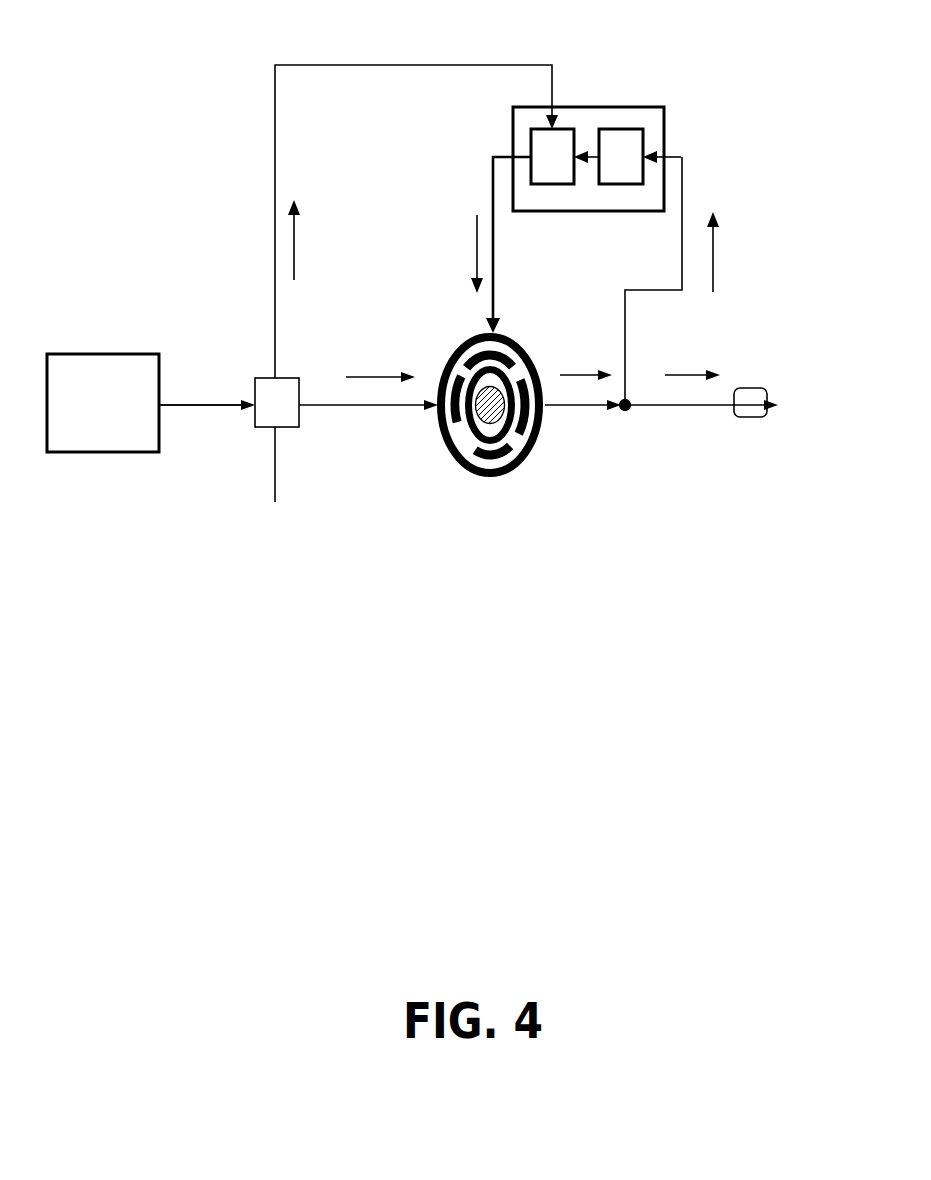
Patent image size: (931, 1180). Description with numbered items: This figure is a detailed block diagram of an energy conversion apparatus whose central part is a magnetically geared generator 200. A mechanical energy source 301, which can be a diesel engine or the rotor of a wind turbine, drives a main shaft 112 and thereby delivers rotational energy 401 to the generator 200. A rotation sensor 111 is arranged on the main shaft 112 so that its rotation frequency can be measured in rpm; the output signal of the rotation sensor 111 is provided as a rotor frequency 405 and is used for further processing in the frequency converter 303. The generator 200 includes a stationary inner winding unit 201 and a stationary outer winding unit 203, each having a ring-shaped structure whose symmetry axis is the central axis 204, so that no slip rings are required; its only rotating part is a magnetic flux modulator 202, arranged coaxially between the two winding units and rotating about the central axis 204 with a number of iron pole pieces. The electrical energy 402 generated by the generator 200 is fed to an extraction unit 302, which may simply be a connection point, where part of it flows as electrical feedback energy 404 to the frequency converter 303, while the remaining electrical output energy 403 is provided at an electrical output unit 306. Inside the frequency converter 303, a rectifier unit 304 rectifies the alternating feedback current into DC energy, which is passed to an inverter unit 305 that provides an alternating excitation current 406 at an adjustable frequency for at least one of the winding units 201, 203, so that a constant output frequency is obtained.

The mechanical energy source 301 is at (103, 354).
The main shaft 112 is at (207, 425).
The rotation sensor 111 is at (279, 460).
The rotor frequency 405 is at (297, 238).
The alternating excitation current 406 is at (475, 253).
The flow arrow 401 is at (377, 373).
The electrical energy 402 is at (576, 372).
The electrical output energy 403 is at (690, 372).
The electrical feedback energy 404 is at (714, 248).
The frequency converter 303 is at (588, 107).
The rectifier unit 304 is at (628, 153).
The inverter unit 305 is at (545, 142).
The magnetically geared generator 200 is at (465, 443).
The inner winding unit 201 is at (455, 350).
The magnetic flux modulator 202 is at (512, 444).
The outer winding unit 203 is at (513, 477).
The central axis 204 is at (483, 423).
The extraction unit 302 is at (621, 414).
The electrical output unit 306 is at (750, 418).